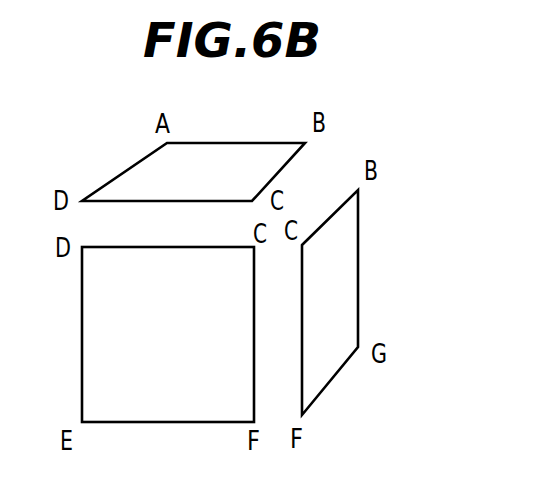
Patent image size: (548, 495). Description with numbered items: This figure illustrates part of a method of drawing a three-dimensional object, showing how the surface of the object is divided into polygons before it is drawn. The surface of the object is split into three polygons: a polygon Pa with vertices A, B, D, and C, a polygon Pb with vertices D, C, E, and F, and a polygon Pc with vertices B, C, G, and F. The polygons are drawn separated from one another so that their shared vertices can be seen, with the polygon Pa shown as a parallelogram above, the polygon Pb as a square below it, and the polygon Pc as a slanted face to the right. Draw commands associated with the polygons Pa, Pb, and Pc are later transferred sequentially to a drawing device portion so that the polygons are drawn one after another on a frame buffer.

The polygon Pa is at (202, 157).
The polygon Pb is at (98, 350).
The polygon Pc is at (338, 282).